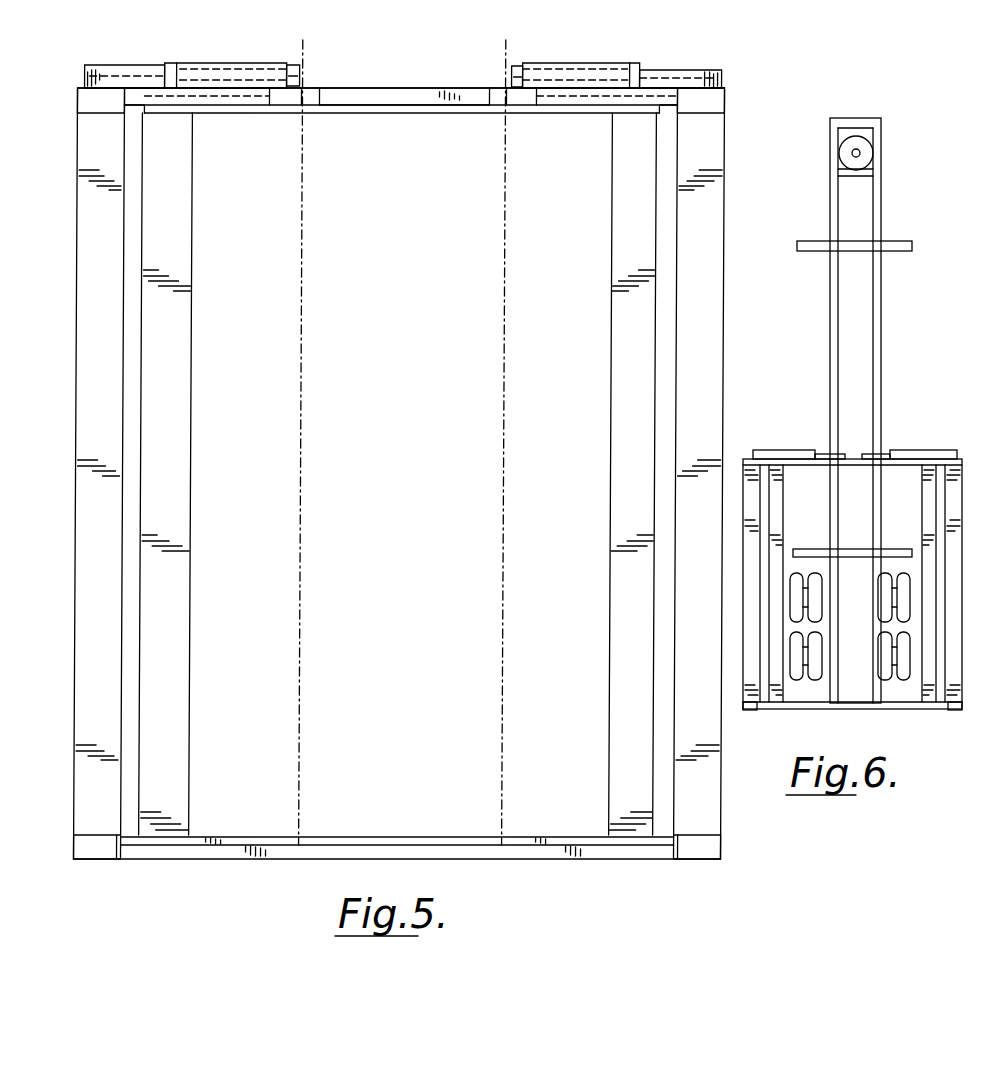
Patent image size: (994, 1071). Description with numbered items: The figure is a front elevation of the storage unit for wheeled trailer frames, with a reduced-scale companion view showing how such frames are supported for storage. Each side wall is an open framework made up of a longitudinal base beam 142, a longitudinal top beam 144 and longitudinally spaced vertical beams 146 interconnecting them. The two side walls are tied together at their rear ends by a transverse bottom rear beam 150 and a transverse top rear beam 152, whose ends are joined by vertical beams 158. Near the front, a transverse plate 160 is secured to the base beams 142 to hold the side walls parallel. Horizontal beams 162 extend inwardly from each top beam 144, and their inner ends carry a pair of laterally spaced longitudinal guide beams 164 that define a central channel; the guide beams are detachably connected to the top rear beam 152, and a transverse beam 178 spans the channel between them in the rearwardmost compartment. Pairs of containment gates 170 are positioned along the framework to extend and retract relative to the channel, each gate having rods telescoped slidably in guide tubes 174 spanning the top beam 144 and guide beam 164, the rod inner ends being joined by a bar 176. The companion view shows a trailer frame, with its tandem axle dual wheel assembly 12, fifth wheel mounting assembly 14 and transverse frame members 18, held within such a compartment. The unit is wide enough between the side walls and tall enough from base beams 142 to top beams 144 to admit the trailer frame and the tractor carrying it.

In FIG. 6, the tandem axle dual wheel assembly 12 is at (805, 690).
In FIG. 6, the fifth wheel mounting assembly 14 is at (863, 160).
In FIG. 6, the transverse frame members 18 is at (922, 228).
In FIG. 5, the longitudinal base beam 142 is at (102, 853).
In FIG. 5, the longitudinal top beam 144 is at (713, 103).
In FIG. 5, the vertical beams 146 is at (120, 200).
In FIG. 5, the transverse bottom rear beam 150 is at (365, 837).
In FIG. 5, the transverse top rear beam 152 is at (385, 113).
In FIG. 5, the vertical beams 158 is at (193, 250).
In FIG. 6, the vertical beams 158 is at (780, 515).
In FIG. 5, the transverse plate 160 is at (453, 855).
In FIG. 5, the horizontal beams 162 is at (223, 100).
In FIG. 5, the longitudinal guide beams 164 is at (287, 100).
In FIG. 6, the containment gates 170 is at (934, 436).
In FIG. 5, the guide tubes 174 is at (130, 67).
In FIG. 5, the bar 176 is at (293, 65).
In FIG. 5, the transverse beam 178 is at (413, 98).